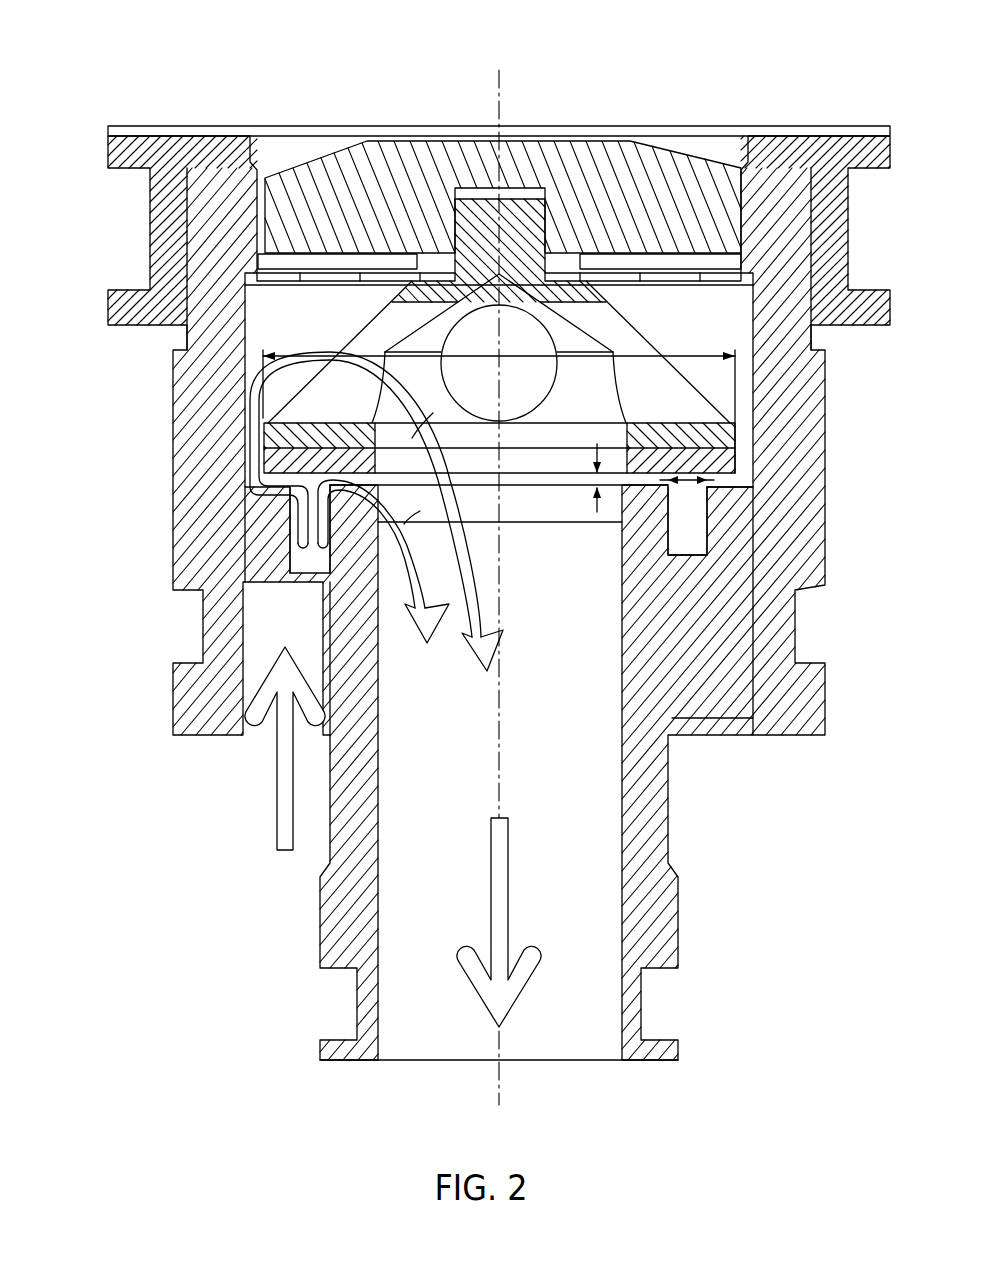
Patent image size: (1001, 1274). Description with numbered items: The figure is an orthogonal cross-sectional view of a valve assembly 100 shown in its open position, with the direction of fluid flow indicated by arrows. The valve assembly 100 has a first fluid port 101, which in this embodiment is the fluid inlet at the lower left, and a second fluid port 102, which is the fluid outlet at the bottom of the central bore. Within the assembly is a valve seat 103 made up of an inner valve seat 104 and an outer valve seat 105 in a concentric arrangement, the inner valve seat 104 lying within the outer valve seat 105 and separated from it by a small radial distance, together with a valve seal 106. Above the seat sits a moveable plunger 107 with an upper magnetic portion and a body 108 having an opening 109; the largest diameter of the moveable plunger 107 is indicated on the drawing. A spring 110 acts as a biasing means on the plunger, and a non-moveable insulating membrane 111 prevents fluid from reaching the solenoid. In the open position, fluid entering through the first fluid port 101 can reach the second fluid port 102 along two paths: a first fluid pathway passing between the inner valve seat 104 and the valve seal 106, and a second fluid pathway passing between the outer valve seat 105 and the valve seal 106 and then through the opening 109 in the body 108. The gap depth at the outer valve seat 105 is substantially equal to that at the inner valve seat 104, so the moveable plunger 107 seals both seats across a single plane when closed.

The valve assembly 100 is at (110, 112).
The first fluid port 101 is at (262, 752).
The second fluid port 102 is at (405, 1072).
The valve seat 103 is at (692, 538).
The inner valve seat 104 is at (657, 488).
The outer valve seat 105 is at (716, 487).
The valve seal 106 is at (730, 456).
The moveable plunger 107 is at (306, 163).
The body 108 is at (372, 336).
The opening 109 is at (540, 344).
The spring 110 is at (250, 273).
The insulating membrane 111 is at (704, 125).